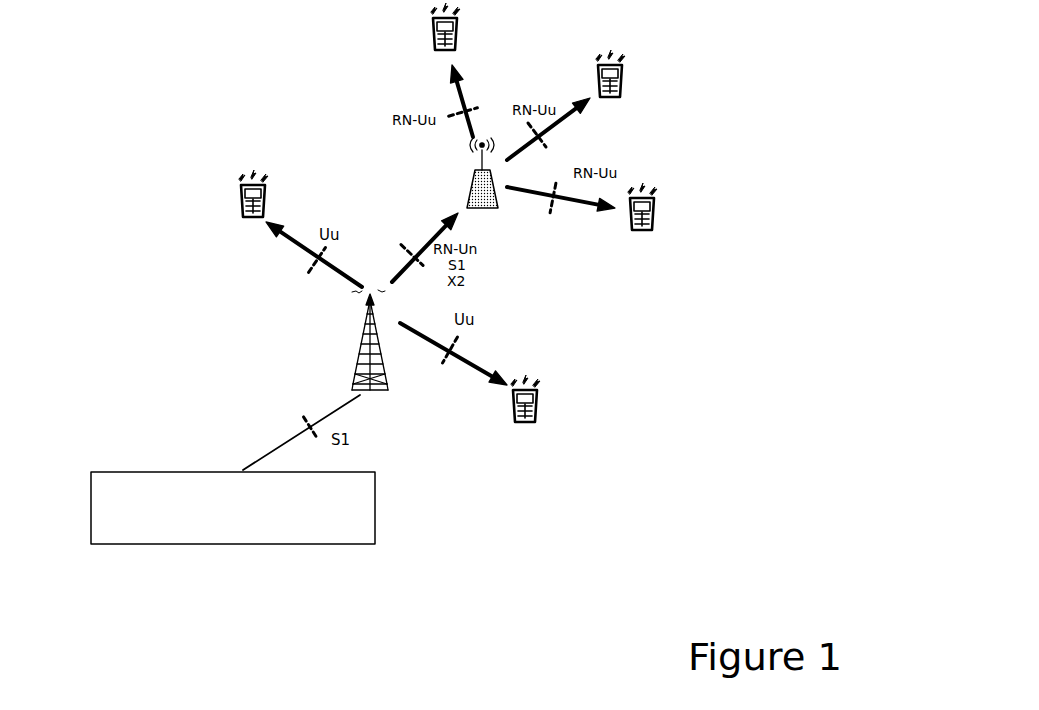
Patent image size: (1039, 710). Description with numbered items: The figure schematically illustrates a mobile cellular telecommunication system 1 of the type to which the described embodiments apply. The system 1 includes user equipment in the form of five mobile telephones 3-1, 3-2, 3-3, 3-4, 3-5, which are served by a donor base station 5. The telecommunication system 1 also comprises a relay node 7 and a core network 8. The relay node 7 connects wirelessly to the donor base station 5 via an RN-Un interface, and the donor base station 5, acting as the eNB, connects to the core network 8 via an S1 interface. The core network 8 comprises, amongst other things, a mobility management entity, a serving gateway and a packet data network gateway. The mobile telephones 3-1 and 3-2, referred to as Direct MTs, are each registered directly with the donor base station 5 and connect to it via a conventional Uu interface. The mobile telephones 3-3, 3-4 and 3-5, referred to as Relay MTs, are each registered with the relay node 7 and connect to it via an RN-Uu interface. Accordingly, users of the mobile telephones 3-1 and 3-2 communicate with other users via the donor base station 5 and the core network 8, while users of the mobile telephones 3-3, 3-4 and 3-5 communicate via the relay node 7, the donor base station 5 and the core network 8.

The mobile telecommunication system 1 is at (556, 472).
The mobile telephone 3-1 is at (513, 405).
The mobile telephone 3-2 is at (241, 198).
The mobile telephone 3-3 is at (624, 75).
The mobile telephone 3-4 is at (432, 44).
The mobile telephone 3-5 is at (656, 208).
The donor base station 5 is at (350, 345).
The relay node 7 is at (500, 200).
The core network 8 is at (375, 495).